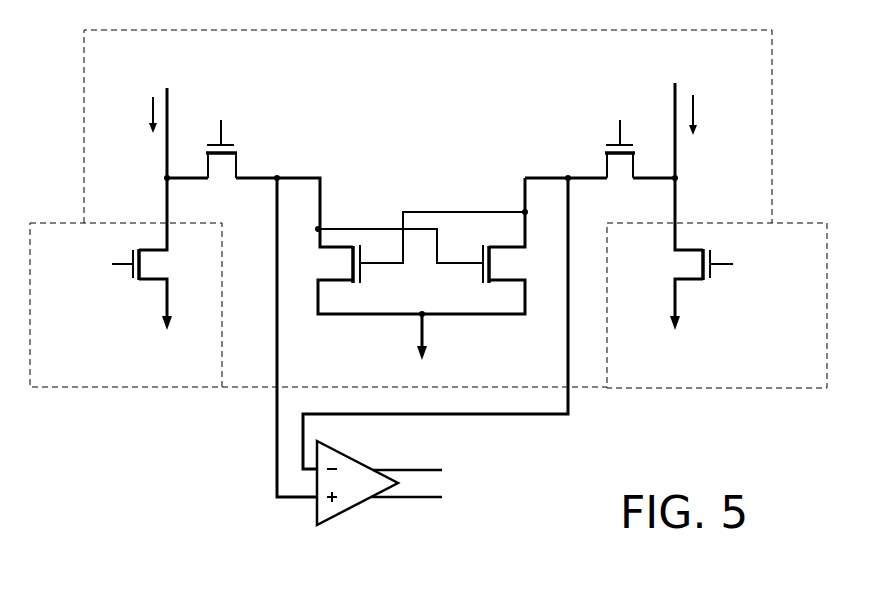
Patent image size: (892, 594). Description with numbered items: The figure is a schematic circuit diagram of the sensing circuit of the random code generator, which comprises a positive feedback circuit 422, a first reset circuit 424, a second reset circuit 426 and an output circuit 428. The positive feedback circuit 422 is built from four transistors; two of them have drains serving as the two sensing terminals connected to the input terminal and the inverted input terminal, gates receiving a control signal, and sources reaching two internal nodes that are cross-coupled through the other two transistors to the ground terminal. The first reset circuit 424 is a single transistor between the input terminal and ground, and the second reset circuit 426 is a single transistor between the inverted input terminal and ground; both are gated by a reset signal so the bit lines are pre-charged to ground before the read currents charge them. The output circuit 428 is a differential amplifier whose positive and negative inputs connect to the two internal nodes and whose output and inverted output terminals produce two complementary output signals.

The positive feedback circuit 422 is at (437, 69).
The first reset circuit 424 is at (90, 366).
The second reset circuit 426 is at (805, 377).
The output circuit 428 is at (351, 455).